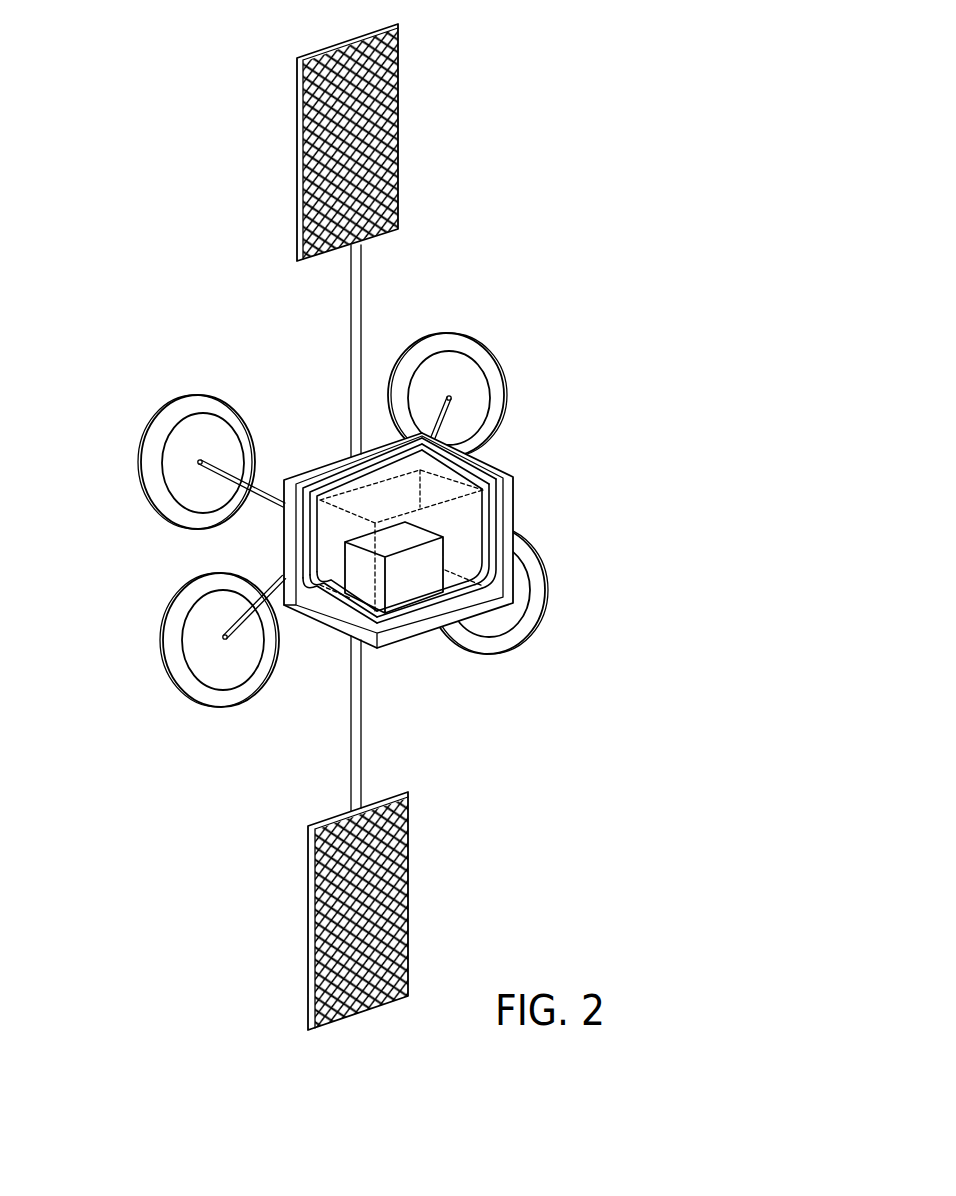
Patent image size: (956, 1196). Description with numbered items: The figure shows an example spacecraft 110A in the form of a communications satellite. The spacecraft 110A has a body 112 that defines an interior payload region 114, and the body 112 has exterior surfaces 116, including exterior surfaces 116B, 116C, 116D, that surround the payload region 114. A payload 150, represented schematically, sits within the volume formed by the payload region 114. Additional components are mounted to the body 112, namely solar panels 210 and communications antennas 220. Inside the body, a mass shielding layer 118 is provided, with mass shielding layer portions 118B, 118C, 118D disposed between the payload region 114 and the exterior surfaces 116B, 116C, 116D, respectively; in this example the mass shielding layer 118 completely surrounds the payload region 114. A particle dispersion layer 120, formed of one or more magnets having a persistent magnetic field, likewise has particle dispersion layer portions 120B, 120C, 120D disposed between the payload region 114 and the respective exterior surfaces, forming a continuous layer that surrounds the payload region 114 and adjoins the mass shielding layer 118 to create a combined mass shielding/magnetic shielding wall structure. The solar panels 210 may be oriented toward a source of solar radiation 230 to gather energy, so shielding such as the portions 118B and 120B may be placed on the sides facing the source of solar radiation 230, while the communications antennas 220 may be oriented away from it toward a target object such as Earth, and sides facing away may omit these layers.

The spacecraft 110A is at (541, 325).
The body 112 is at (390, 643).
The interior payload region 114 is at (376, 508).
The exterior surfaces 116 is at (446, 620).
The exterior surface 116B is at (507, 568).
The exterior surface 116C is at (307, 608).
The exterior surface 116D is at (498, 473).
The mass shielding layer 118 is at (466, 613).
The mass shielding layer portion 118B is at (498, 535).
The mass shielding layer portion 118C is at (330, 612).
The mass shielding layer portion 118D is at (480, 477).
The particle dispersion layer 120 is at (491, 603).
The particle dispersion layer portion 120B is at (488, 502).
The particle dispersion layer portion 120C is at (355, 617).
The particle dispersion layer portion 120D is at (467, 480).
The payload 150 is at (370, 540).
The solar panels 210 is at (387, 133).
The communications antennas 220 is at (150, 468).
The source of solar radiation 230 is at (642, 712).